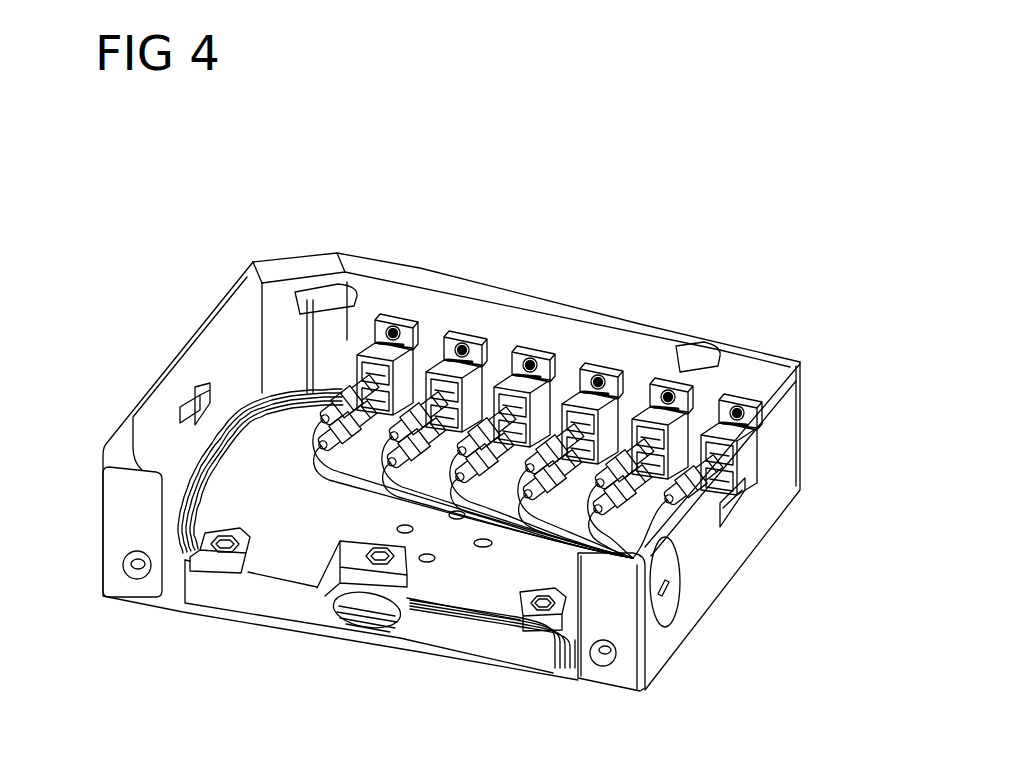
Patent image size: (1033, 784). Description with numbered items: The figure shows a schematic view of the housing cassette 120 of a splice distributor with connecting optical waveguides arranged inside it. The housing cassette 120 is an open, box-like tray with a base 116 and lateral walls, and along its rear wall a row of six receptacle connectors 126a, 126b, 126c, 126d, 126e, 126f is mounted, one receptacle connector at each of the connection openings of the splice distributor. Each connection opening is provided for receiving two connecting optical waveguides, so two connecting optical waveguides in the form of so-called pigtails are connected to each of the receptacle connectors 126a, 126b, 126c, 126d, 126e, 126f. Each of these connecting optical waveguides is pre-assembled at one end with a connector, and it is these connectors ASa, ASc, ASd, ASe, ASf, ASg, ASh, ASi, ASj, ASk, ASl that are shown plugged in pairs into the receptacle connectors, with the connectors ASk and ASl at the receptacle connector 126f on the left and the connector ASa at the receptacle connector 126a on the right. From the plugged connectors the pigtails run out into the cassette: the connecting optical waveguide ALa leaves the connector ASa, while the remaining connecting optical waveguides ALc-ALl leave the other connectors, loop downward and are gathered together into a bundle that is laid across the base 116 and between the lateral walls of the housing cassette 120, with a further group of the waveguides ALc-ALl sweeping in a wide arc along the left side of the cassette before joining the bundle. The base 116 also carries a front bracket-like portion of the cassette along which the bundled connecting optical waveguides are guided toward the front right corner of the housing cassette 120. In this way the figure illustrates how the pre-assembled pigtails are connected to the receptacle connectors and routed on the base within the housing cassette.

The housing cassette 120 is at (190, 332).
The base 116 is at (278, 565).
The receptacle connector 126a is at (723, 430).
The receptacle connector 126b is at (665, 410).
The receptacle connector 126c is at (597, 397).
The receptacle connector 126d is at (530, 373).
The receptacle connector 126e is at (452, 363).
The receptacle connector 126f is at (382, 353).
The connector ASa is at (677, 480).
The connector ASc is at (660, 437).
The connector ASd is at (640, 457).
The connector ASe is at (553, 450).
The connector ASf is at (560, 437).
The connector ASg is at (473, 430).
The connector ASh is at (480, 440).
The connector ASi is at (405, 420).
The connector ASj is at (407, 437).
The connector ASk is at (330, 407).
The connector ASl is at (338, 423).
The connecting optical waveguide ALa is at (662, 498).
The connecting optical waveguides ALc-ALl is at (612, 544).